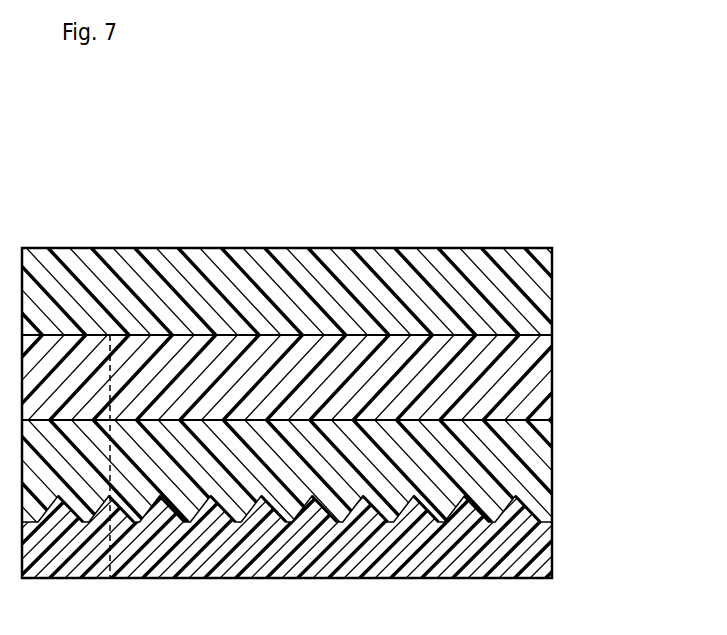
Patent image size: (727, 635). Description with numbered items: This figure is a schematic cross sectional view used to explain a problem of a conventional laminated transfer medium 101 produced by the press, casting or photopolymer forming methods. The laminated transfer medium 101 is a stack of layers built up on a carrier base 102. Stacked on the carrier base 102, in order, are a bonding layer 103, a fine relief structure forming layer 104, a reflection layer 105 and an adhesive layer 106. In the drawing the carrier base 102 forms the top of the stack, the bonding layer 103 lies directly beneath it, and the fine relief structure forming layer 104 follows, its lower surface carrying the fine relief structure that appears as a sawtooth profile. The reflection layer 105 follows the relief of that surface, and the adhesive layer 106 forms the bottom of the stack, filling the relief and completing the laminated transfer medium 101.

The laminated transfer medium 101 is at (456, 194).
The carrier base 102 is at (530, 288).
The bonding layer 103 is at (529, 377).
The fine relief structure forming layer 104 is at (527, 461).
The reflection layer 105 is at (527, 515).
The adhesive layer 106 is at (528, 560).